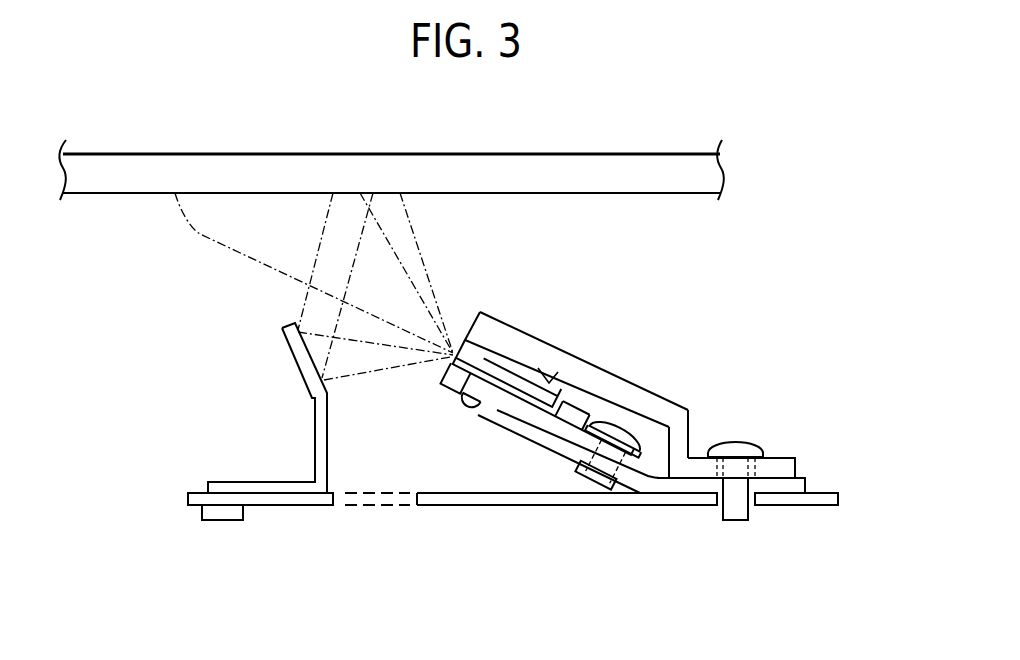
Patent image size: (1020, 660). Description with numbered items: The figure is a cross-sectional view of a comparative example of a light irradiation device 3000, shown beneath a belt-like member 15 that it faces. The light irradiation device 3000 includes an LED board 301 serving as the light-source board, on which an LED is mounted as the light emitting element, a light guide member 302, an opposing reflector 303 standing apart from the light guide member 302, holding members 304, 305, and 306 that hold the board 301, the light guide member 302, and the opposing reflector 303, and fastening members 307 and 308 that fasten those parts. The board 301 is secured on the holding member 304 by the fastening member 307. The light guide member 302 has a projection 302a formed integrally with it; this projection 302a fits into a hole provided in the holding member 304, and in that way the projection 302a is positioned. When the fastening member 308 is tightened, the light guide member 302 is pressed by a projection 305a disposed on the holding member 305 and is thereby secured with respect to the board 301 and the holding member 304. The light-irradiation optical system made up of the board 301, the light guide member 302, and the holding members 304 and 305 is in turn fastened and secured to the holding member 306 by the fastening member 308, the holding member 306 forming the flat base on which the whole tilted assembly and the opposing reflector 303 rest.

The intermediate transfer belt 15 is at (643, 193).
The opposing reflector 303 is at (292, 343).
The holding member 306 is at (619, 516).
The light irradiation device 3000 is at (723, 343).
The projection 305a is at (548, 372).
The fastening member 307 is at (632, 412).
The holding member 305 is at (788, 470).
The holding member 304 is at (800, 488).
The fastening member 308 is at (740, 438).
The light guide member 302 is at (502, 368).
The LED board 301 is at (577, 410).
The projection 302a is at (462, 411).